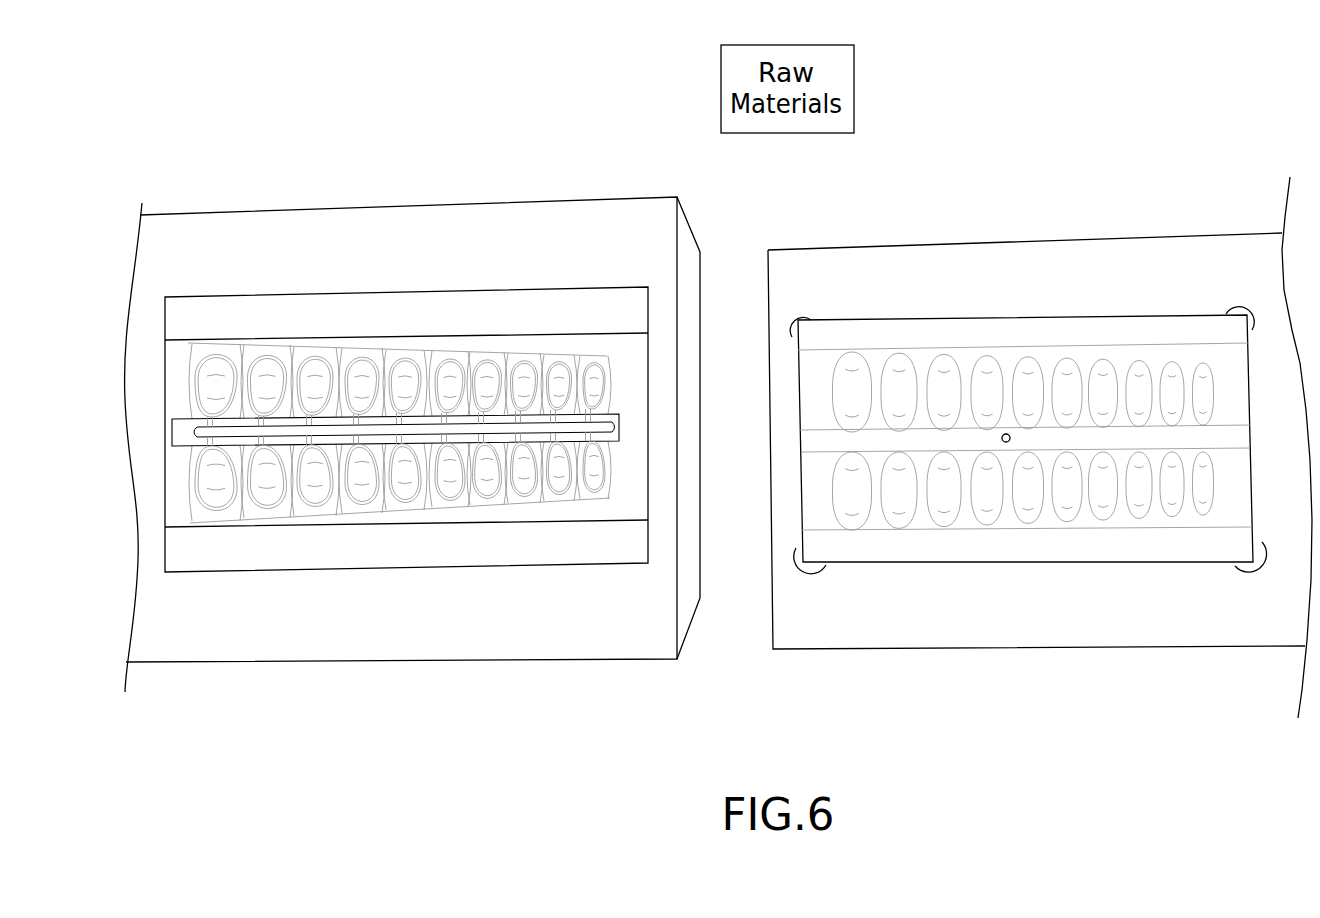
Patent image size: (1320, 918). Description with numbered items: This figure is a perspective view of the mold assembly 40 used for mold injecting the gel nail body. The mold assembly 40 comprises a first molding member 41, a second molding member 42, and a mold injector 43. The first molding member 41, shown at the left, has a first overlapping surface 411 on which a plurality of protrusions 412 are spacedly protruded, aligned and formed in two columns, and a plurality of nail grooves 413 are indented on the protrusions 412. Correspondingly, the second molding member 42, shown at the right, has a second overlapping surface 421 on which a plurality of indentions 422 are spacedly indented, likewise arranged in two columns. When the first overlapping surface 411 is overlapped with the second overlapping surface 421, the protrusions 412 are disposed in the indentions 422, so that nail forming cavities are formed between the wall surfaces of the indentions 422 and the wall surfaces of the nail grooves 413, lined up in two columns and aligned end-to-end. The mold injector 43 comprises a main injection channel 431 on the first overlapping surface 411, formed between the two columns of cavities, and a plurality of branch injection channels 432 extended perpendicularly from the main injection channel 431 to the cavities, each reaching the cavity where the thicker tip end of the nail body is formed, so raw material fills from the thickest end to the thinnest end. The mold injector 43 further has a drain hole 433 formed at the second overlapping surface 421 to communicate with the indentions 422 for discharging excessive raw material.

The mold assembly 40 is at (1183, 92).
The first molding member 41 is at (483, 213).
The first overlapping surface 411 is at (516, 263).
The protrusions 412 is at (362, 345).
The nail grooves 413 is at (303, 362).
The second molding member 42 is at (1059, 250).
The second overlapping surface 421 is at (1078, 294).
The indentions 422 is at (968, 352).
The mold injector 43 is at (391, 758).
The main injection channel 431 is at (338, 428).
The branch injection channels 432 is at (308, 440).
The drain hole 433 is at (1006, 443).